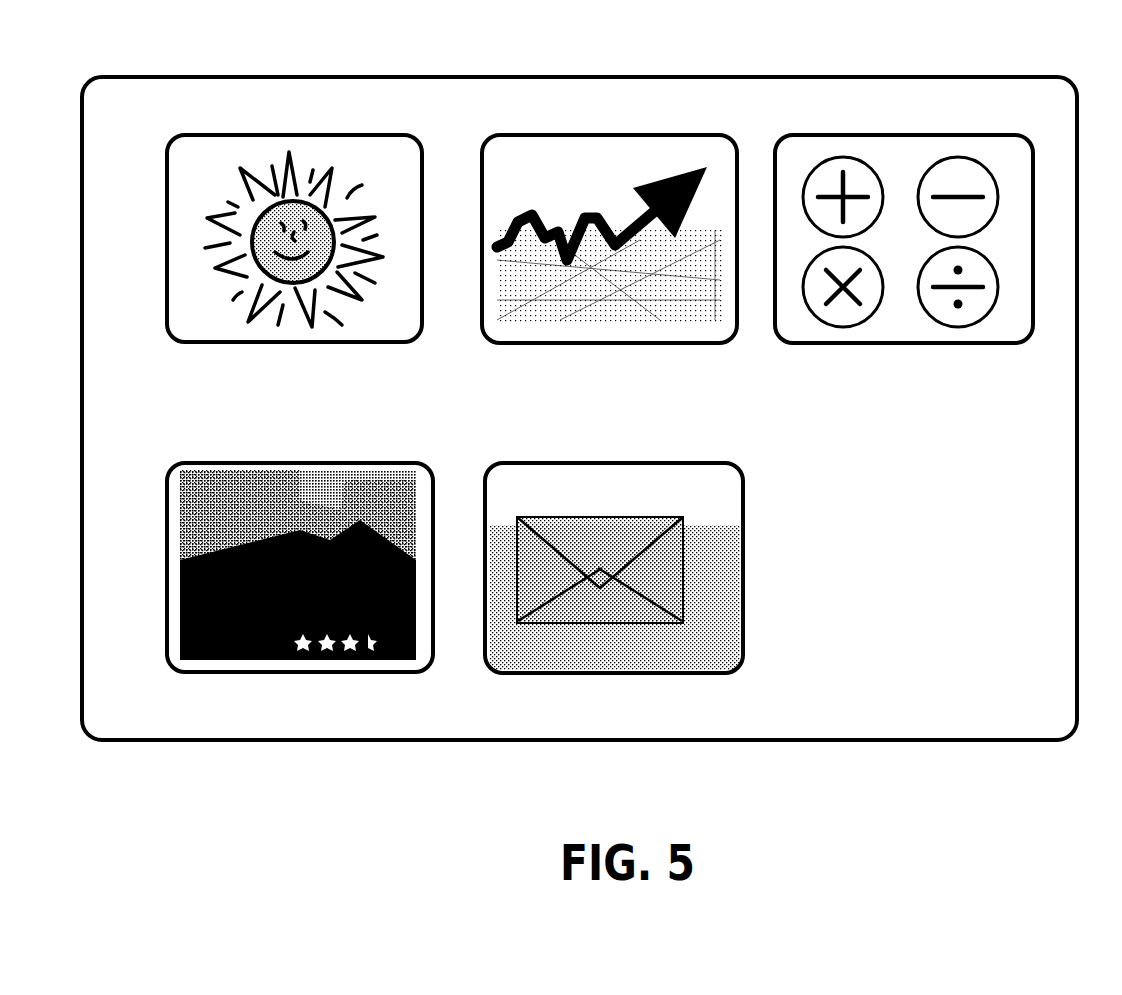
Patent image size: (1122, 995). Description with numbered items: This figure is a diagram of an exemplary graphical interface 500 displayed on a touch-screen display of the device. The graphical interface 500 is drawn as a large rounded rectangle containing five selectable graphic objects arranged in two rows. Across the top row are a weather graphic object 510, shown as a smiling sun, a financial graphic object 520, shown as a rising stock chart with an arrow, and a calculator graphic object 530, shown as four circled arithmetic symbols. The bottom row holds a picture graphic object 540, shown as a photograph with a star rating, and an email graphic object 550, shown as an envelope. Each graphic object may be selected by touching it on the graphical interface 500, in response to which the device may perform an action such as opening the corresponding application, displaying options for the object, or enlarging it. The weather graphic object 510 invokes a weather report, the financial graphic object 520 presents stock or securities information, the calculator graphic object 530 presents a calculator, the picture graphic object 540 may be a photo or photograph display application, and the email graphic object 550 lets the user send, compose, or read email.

The graphical interface 500 is at (1028, 77).
The weather graphic object 510 is at (443, 121).
The financial graphic object 520 is at (731, 113).
The calculator graphic object 530 is at (980, 135).
The picture graphic object 540 is at (437, 441).
The email graphic object 550 is at (712, 463).